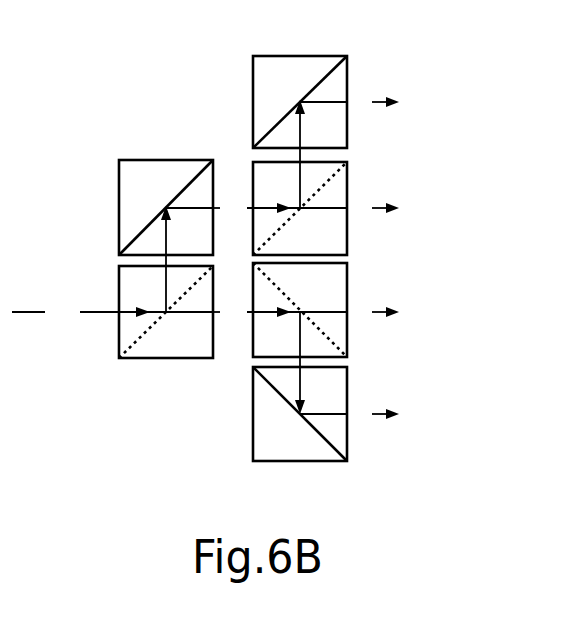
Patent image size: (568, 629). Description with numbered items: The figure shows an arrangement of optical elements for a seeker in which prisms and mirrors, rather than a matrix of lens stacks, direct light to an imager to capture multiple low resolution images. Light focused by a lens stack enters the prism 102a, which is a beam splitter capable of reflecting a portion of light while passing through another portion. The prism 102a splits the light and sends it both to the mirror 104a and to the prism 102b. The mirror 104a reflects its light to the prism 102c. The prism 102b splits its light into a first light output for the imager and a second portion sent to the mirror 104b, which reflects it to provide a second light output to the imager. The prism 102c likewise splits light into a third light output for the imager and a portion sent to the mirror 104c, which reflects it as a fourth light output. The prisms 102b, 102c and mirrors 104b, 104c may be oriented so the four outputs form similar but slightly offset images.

The mirror 104a is at (163, 160).
The prism 102a is at (153, 358).
The mirror 104c is at (307, 56).
The prism 102c is at (350, 175).
The prism 102b is at (350, 280).
The mirror 104b is at (317, 461).